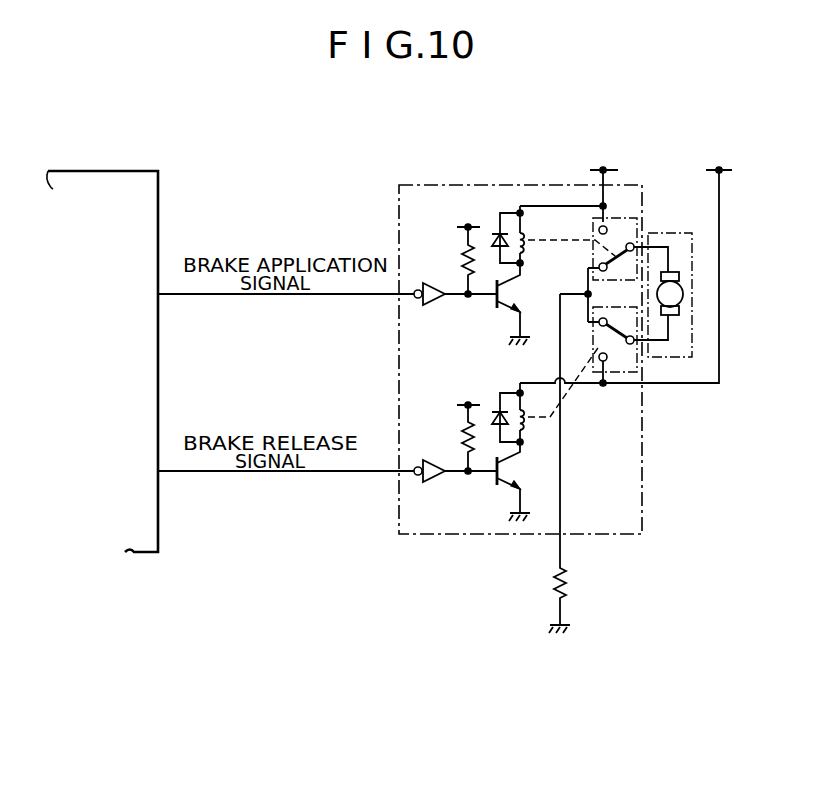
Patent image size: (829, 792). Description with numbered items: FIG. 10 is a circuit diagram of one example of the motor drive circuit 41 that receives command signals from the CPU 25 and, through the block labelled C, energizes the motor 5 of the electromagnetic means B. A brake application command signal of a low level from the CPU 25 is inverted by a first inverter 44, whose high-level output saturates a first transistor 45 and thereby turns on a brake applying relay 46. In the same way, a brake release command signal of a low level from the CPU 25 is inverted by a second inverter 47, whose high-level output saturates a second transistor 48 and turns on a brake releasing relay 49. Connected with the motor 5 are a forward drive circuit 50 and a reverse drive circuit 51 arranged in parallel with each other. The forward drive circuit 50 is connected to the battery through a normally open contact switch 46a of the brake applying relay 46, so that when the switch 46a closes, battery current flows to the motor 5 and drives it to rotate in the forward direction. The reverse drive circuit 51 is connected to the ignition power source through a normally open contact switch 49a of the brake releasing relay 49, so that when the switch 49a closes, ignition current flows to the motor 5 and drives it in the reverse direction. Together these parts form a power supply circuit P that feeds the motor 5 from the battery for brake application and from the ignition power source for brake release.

The CPU 25 is at (123, 170).
The motor drive circuit 41 is at (497, 183).
The first inverter 44 is at (432, 305).
The first transistor 45 is at (503, 306).
The brake applying relay 46 is at (529, 249).
The normally open contact switch 46a is at (637, 212).
The second inverter 47 is at (433, 460).
The second transistor 48 is at (503, 483).
The brake releasing relay 49 is at (527, 426).
The normally open contact switch 49a is at (627, 375).
The motor 5 is at (683, 300).
The forward drive circuit 50 is at (600, 190).
The reverse drive circuit 51 is at (719, 276).
The controller C is at (356, 148).
The electromagnetic means B is at (678, 232).
The power supply circuit P is at (729, 234).